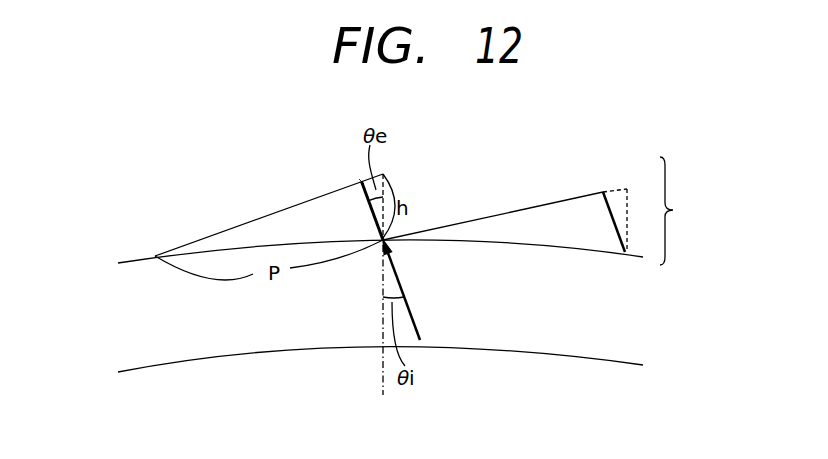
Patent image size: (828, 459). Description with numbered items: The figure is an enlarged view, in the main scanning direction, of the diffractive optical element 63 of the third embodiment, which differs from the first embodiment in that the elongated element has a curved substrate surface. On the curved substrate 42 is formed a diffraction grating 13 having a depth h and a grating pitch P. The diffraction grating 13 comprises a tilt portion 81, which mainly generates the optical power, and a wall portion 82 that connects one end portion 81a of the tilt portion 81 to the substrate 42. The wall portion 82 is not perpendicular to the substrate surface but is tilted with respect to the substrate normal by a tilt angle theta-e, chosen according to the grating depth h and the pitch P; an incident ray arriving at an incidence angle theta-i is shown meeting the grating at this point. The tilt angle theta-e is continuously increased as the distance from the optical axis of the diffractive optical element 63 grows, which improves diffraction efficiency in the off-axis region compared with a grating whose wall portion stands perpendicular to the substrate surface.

The tilt portion 81 is at (252, 219).
The one end portion of the tilt portion 81a is at (361, 181).
The wall portion 82 is at (366, 195).
The diffractive optical element 63 is at (570, 172).
The diffraction grating 13 is at (680, 211).
The substrate 42 is at (277, 340).